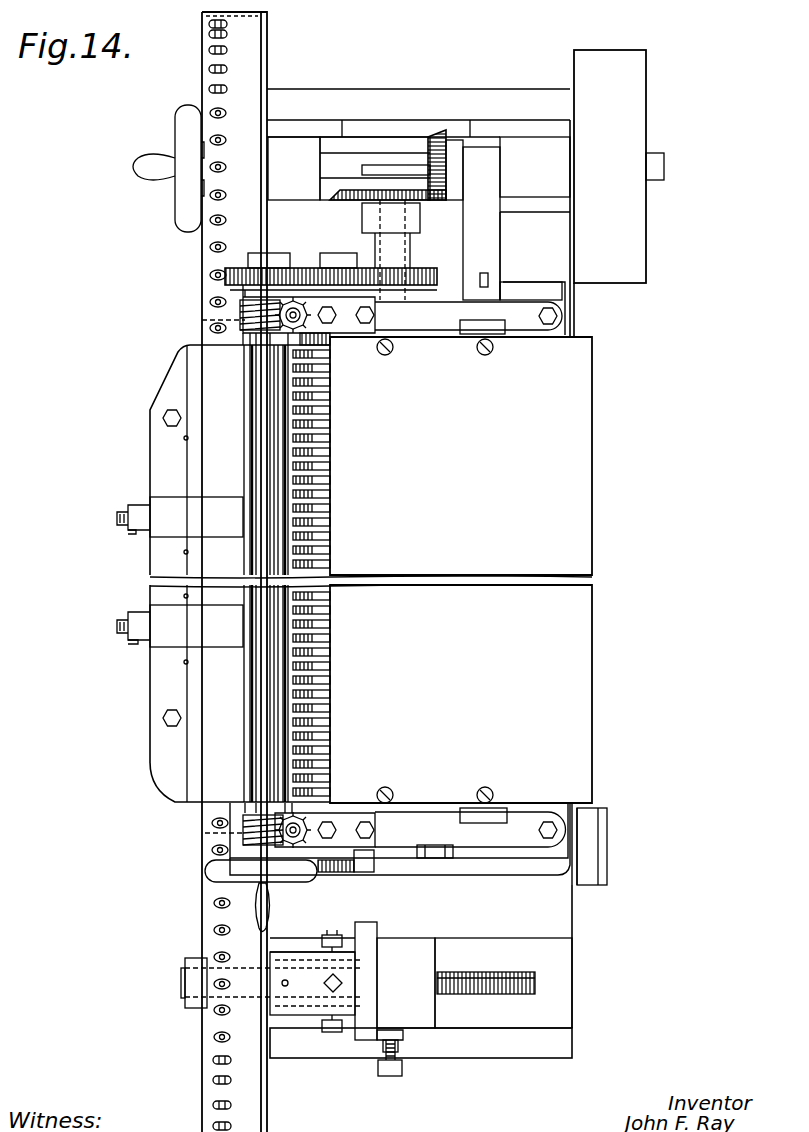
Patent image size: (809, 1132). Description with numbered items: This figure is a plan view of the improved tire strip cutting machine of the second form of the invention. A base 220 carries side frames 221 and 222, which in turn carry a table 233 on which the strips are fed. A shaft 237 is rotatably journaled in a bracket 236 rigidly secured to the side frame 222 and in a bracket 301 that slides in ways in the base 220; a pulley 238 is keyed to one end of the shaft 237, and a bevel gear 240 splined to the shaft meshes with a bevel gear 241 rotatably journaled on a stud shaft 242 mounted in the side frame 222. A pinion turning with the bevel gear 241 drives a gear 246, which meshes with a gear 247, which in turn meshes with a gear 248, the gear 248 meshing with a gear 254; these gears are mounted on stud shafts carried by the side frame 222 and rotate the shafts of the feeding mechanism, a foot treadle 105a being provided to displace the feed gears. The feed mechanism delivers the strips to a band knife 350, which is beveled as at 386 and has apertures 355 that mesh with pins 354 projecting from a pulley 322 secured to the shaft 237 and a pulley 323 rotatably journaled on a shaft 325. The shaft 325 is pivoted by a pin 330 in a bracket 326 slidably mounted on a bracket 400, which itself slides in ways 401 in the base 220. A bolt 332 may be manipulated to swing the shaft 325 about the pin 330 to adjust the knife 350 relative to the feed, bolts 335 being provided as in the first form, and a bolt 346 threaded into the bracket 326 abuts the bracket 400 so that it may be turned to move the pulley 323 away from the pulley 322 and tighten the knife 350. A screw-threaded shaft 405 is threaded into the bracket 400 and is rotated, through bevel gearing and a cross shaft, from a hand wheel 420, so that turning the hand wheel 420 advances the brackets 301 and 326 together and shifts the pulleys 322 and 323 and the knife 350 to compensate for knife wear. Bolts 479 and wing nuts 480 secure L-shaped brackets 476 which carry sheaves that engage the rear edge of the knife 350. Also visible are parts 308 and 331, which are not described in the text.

The bevel 386 is at (268, 55).
The pins 354 is at (218, 50).
The apertures 355 is at (214, 112).
The hand wheel 420 is at (176, 131).
The pulley 322 is at (204, 242).
The knife 350 is at (210, 279).
The bracket 301 is at (290, 152).
The frame member 308 is at (358, 124).
The bevel gear 240 is at (433, 140).
The bracket 236 is at (473, 157).
The shaft 237 is at (512, 163).
The pulley 238 is at (640, 92).
The bevel gear 241 is at (358, 190).
The stud shaft 242 is at (392, 228).
The gear 254 is at (290, 265).
The gear 248 is at (335, 268).
The gear 246 is at (425, 270).
The gear 247 is at (402, 290).
The side frame 222 is at (404, 332).
The table 233 is at (575, 437).
The bolts 479 is at (118, 517).
The wing nuts 480 is at (124, 532).
The L-shaped brackets 476 is at (148, 540).
The side frame 221 is at (402, 818).
The foot treadle 105a is at (526, 876).
The bracket 326 is at (288, 950).
The screw 331 is at (332, 934).
The bracket 400 is at (402, 946).
The ways 401 is at (478, 938).
The shaft 405 is at (520, 966).
The bolts 335 is at (343, 984).
The shaft 325 is at (182, 990).
The pin 330 is at (288, 986).
The bolt 346 is at (400, 1038).
The bolt 332 is at (335, 1032).
The base 220 is at (576, 1052).
The pulley 323 is at (206, 1071).